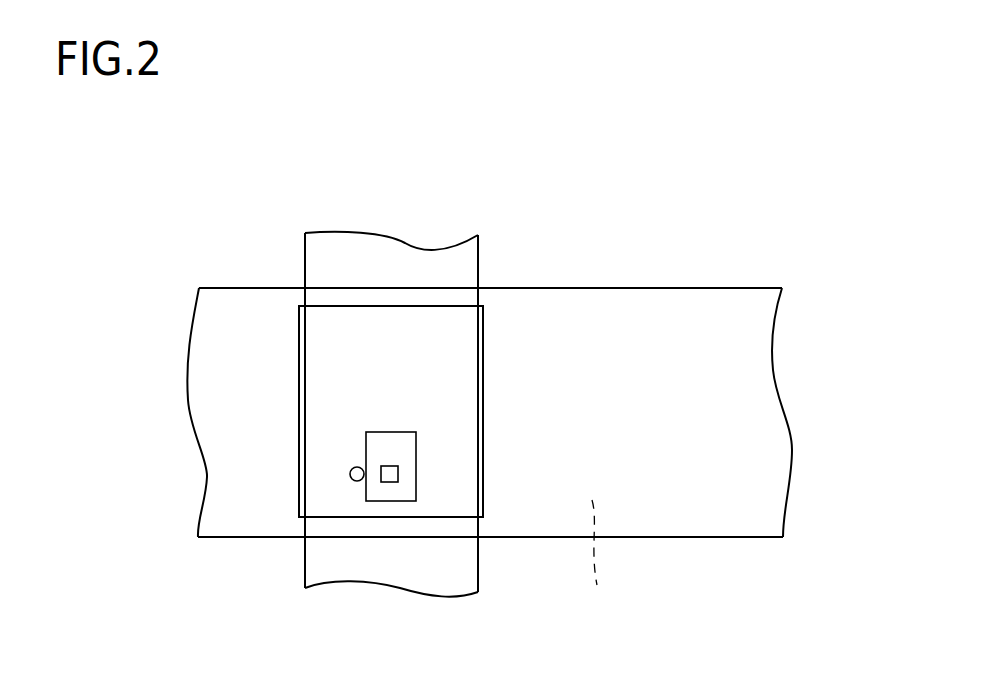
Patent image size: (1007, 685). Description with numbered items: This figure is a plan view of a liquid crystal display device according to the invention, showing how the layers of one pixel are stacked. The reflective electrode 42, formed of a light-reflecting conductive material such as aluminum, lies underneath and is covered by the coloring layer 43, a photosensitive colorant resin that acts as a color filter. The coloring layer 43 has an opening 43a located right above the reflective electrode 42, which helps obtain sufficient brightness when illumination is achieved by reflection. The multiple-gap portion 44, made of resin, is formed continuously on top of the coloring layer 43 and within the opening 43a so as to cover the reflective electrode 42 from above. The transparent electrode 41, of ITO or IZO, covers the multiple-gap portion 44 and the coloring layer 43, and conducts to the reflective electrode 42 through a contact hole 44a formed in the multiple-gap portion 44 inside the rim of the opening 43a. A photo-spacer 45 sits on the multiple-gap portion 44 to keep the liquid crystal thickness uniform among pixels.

The transparent electrode 41 is at (613, 558).
The reflective electrode 42 is at (457, 517).
The coloring layer 43 is at (688, 537).
The opening 43a is at (416, 455).
The multiple-gap portion 44 is at (478, 266).
The contact hole 44a is at (389, 482).
The photo-spacer 45 is at (350, 474).